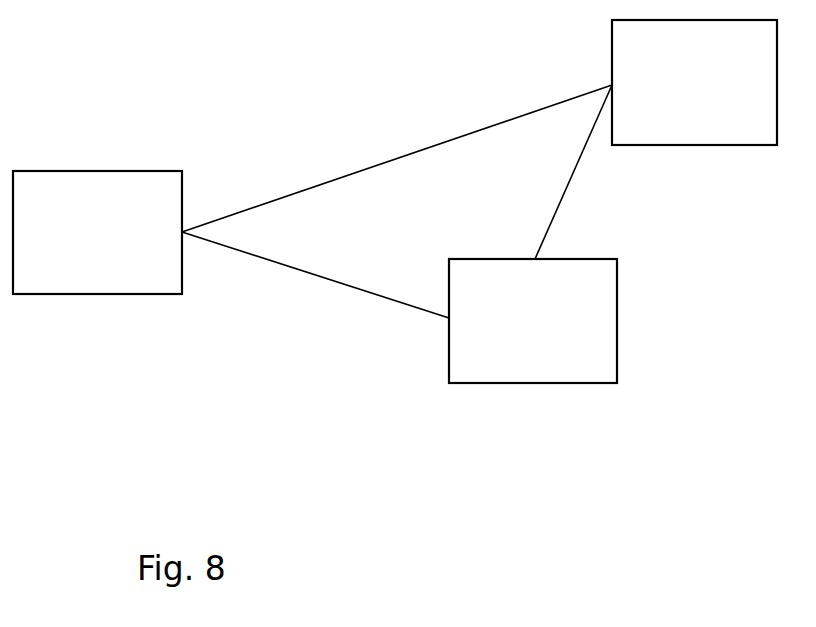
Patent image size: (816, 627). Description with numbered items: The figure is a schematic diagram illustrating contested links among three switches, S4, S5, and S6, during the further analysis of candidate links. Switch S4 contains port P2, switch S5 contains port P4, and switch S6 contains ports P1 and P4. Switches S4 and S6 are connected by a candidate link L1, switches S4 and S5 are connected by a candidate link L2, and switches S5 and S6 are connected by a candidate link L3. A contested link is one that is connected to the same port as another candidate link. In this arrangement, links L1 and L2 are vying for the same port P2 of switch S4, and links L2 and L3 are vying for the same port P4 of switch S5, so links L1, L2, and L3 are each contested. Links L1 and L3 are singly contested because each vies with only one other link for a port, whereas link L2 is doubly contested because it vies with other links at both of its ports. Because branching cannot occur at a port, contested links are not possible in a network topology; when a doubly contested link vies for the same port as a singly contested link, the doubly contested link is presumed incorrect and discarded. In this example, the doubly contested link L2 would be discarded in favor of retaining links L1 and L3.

The switch S4 is at (97, 232).
The switch S5 is at (694, 82).
The switch S6 is at (533, 321).
The candidate link L1 is at (333, 283).
The candidate link L2 is at (358, 171).
The candidate link L3 is at (566, 192).
The port P1 is at (556, 245).
The port P2 is at (226, 230).
The port P4 is at (508, 220).